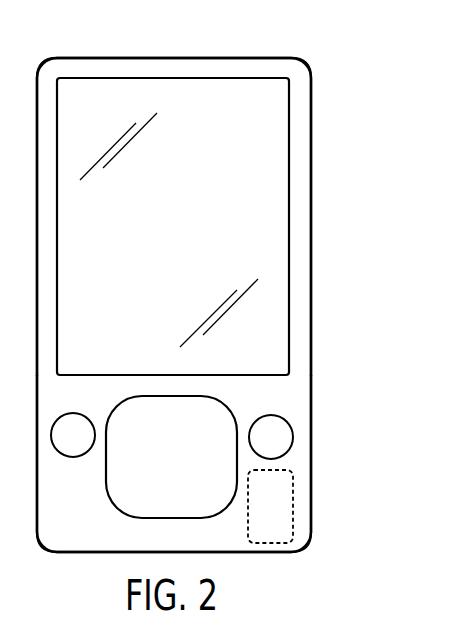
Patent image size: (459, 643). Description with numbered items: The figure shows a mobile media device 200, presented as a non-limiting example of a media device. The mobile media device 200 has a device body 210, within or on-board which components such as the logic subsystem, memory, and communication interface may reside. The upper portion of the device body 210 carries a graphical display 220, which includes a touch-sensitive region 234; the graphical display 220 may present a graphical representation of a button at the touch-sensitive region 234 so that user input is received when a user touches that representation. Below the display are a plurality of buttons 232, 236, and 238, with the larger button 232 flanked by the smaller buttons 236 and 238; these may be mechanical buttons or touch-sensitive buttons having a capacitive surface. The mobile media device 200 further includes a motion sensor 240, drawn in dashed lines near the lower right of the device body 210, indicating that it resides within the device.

The mobile media device 200 is at (340, 53).
The device body 210 is at (287, 412).
The graphical display 220 is at (288, 248).
The button 232 is at (187, 468).
The touch-sensitive region 234 is at (187, 236).
The button 236 is at (87, 444).
The button 238 is at (285, 446).
The motion sensor 240 is at (285, 514).